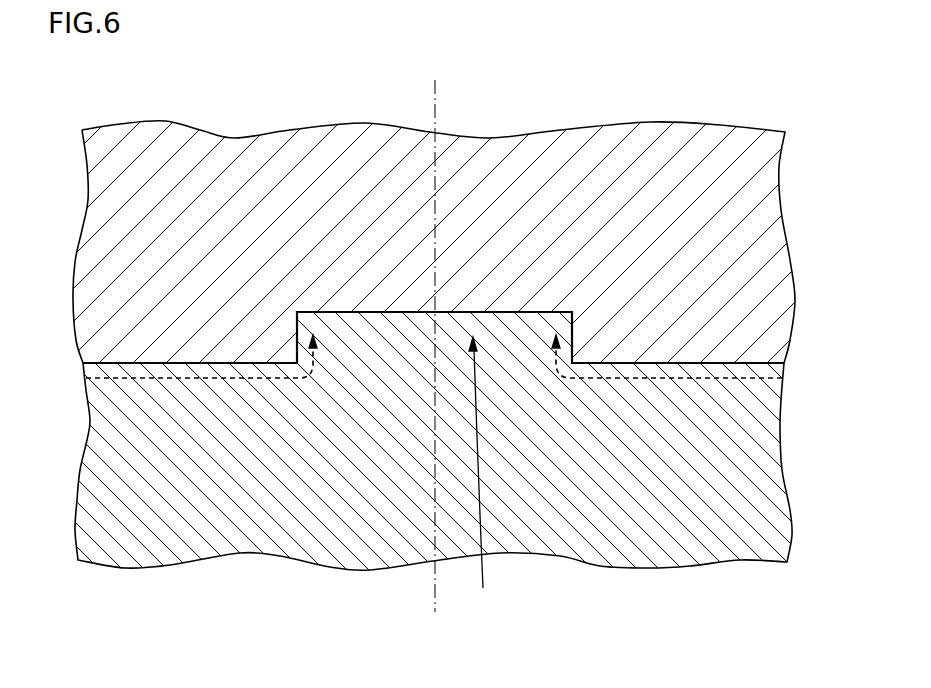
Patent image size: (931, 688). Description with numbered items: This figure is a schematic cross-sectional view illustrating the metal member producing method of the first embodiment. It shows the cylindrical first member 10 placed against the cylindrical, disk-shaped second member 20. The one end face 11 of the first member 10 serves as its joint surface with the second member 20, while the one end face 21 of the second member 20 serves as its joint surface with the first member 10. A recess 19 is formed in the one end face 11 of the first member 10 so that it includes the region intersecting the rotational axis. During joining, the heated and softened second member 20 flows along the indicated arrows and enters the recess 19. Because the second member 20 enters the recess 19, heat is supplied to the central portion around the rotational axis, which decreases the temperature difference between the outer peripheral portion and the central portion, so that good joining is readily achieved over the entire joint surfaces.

The first member 10 is at (765, 232).
The second member 20 is at (765, 448).
The one end face of the second member 21 is at (118, 363).
The one end face of the first member 11 is at (767, 383).
The recess 19 is at (483, 476).